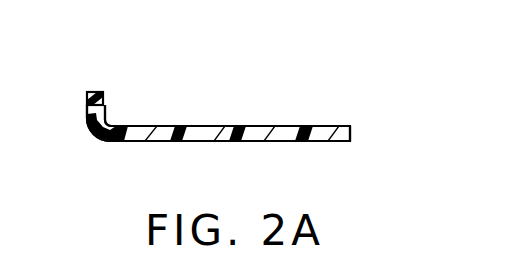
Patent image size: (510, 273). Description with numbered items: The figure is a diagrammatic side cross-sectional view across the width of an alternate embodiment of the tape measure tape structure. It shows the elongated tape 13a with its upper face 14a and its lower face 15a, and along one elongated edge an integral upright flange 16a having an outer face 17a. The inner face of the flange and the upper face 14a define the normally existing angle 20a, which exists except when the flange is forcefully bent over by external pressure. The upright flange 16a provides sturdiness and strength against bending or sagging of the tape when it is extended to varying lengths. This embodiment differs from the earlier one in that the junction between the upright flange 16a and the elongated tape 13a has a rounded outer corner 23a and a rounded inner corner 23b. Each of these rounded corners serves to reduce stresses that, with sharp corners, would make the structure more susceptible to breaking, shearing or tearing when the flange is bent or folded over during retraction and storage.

The elongated tape 13a is at (310, 143).
The upper face 14a is at (258, 126).
The lower face 15a is at (224, 141).
The upright flange 16a is at (95, 91).
The outer face 17a is at (87, 111).
The angle 20a is at (111, 97).
The rounded outer corner 23a is at (93, 134).
The rounded inner corner 23b is at (124, 113).